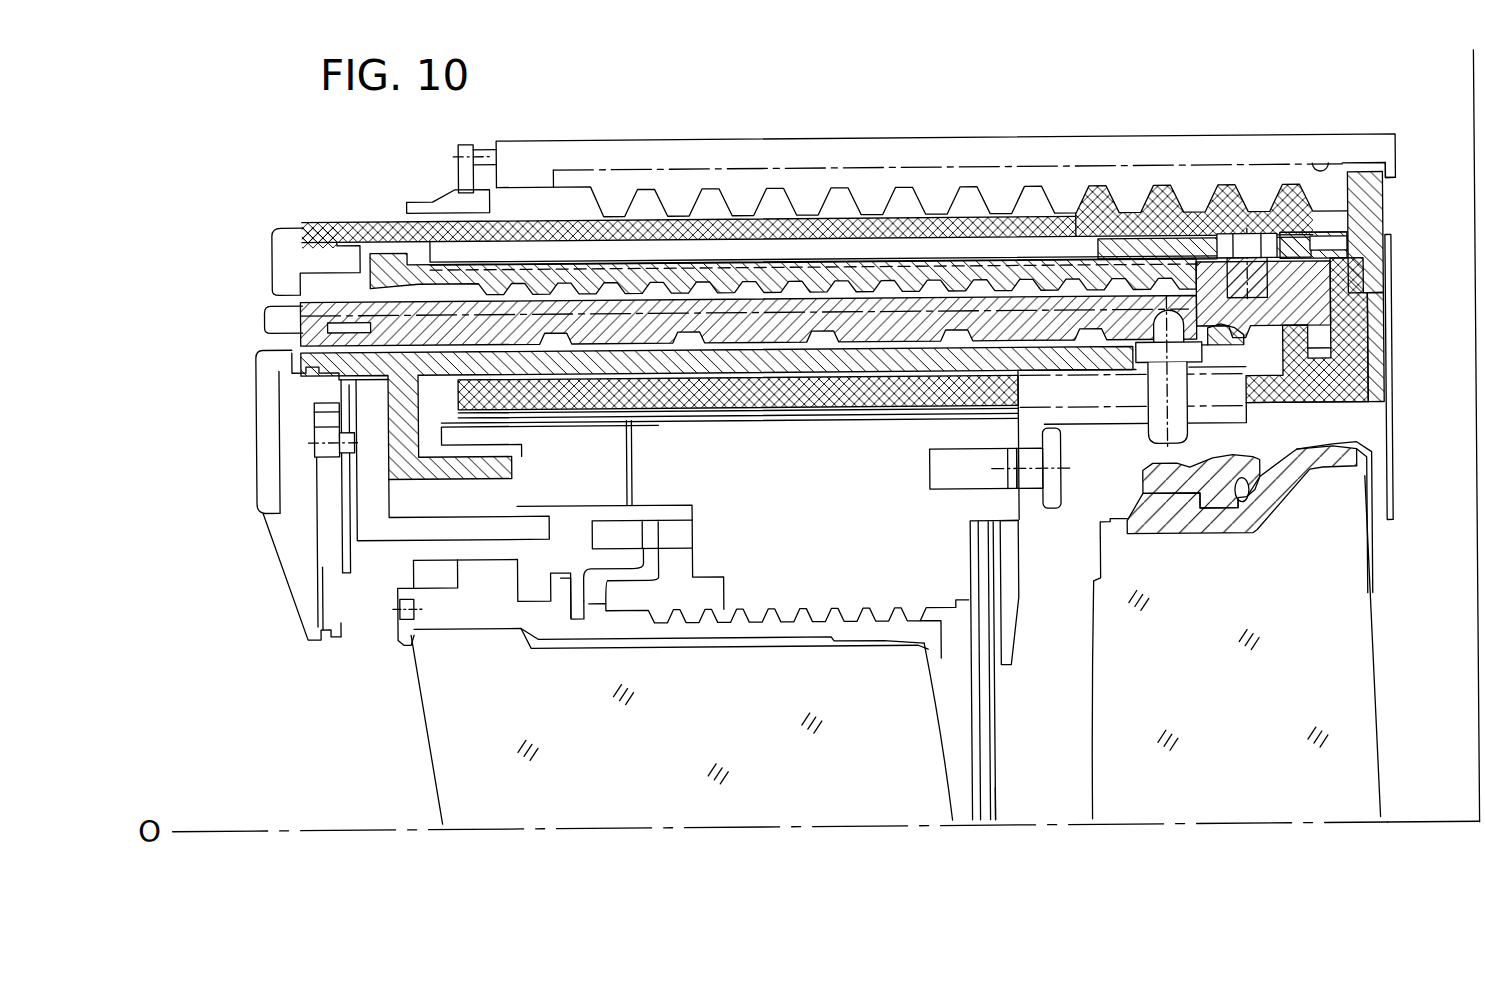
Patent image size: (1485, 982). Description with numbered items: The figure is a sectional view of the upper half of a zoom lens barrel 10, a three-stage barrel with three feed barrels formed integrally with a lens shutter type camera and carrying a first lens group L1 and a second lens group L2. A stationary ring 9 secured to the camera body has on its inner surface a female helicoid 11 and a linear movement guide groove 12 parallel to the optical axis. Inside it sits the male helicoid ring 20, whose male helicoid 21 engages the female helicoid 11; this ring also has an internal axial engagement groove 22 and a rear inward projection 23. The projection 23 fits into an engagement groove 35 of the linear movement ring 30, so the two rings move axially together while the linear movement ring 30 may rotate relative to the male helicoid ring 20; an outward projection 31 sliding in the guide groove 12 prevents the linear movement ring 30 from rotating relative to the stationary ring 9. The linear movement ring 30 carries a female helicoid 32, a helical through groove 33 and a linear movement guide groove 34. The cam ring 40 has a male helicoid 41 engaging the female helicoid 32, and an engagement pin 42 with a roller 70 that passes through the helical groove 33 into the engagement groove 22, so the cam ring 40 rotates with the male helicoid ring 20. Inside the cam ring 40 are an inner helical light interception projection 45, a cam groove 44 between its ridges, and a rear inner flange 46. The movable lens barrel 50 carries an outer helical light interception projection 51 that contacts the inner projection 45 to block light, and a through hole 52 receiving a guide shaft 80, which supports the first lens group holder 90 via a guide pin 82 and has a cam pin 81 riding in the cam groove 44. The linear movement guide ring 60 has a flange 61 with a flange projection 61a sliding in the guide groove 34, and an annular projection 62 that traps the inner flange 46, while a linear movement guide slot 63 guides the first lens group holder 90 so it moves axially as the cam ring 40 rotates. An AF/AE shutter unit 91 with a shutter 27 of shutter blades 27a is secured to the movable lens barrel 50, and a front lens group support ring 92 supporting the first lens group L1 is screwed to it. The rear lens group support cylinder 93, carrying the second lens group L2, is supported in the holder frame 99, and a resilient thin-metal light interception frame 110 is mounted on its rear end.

The zoom lens barrel 10 is at (572, 89).
The stationary ring 9 is at (1394, 184).
The female helicoid 11 is at (1066, 203).
The linear movement guide groove 12 is at (1336, 165).
The male helicoid ring 20 is at (323, 238).
The male helicoid 21 is at (1147, 268).
The engagement groove 22 is at (761, 255).
The projection 23 is at (1332, 249).
The shutter 27 is at (1003, 727).
The shutter blades 27a is at (1012, 797).
The linear movement ring 30 is at (393, 262).
The projection 31 is at (1352, 222).
The female helicoid 32 is at (1170, 215).
The helical groove 33 is at (1222, 250).
The linear movement guide groove 34 is at (1374, 290).
The engagement groove 35 is at (1330, 247).
The cam ring 40 is at (320, 313).
The male helicoid 41 is at (1190, 295).
The engagement pin 42 is at (1288, 250).
The cam groove 44 is at (1053, 322).
The inner helical light interception projection 45 is at (962, 352).
The inner flange 46 is at (1325, 348).
The movable lens barrel 50 is at (300, 372).
The outer helical light interception projection 51 is at (937, 348).
The through hole 52 is at (1305, 401).
The linear movement guide ring 60 is at (451, 400).
The flange 61 is at (1362, 324).
The flange projection 61a is at (1368, 274).
The annular projection 62 is at (1334, 358).
The linear movement guide slot 63 is at (1240, 399).
The roller 70 is at (1265, 268).
The guide shaft 80 is at (1062, 490).
The cam pin 81 is at (1142, 396).
The guide pin 82 is at (1096, 477).
The first lens group holder 90 is at (1065, 421).
The AF/AE shutter unit 91 is at (949, 567).
The front lens group support ring 92 is at (776, 620).
The rear lens group support cylinder 93 is at (1143, 532).
The holder frame 99 is at (1245, 475).
The light interception frame 110 is at (1374, 547).
The first lens group L1 is at (664, 808).
The second lens group L2 is at (1210, 806).